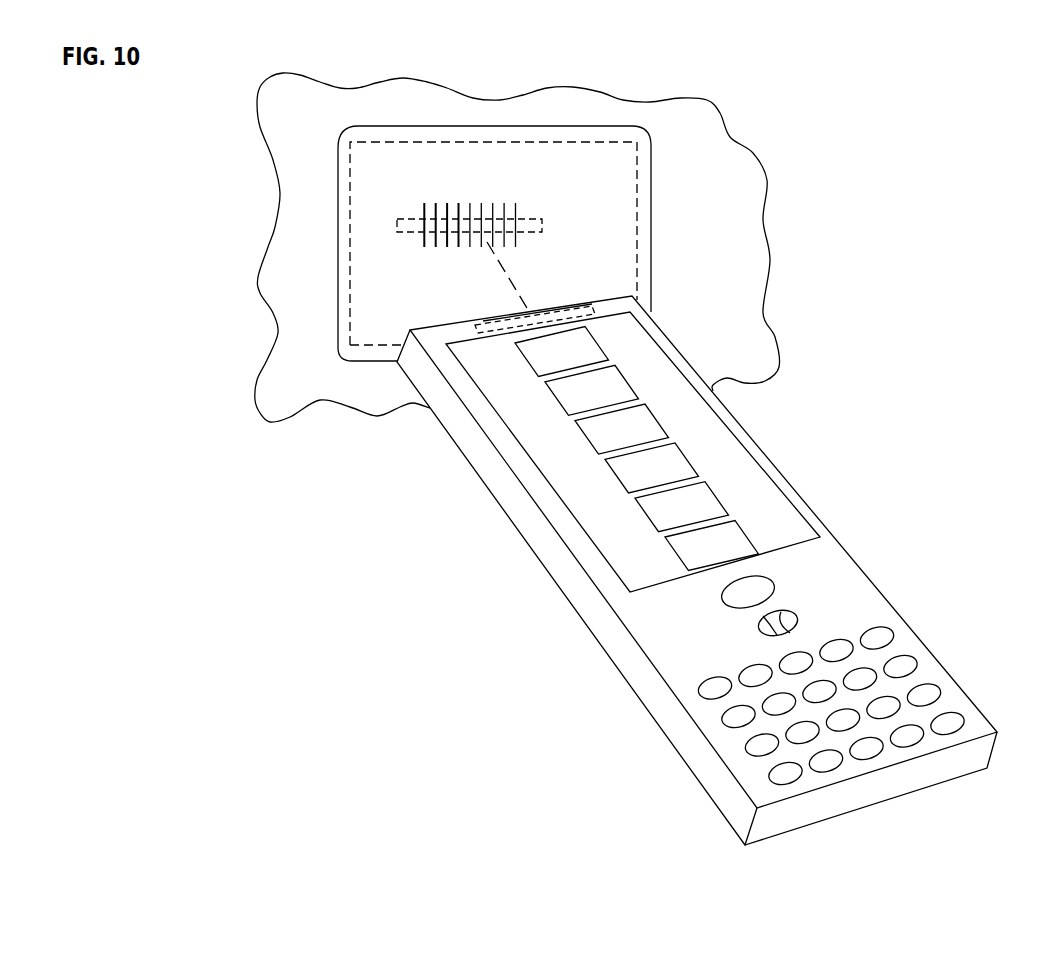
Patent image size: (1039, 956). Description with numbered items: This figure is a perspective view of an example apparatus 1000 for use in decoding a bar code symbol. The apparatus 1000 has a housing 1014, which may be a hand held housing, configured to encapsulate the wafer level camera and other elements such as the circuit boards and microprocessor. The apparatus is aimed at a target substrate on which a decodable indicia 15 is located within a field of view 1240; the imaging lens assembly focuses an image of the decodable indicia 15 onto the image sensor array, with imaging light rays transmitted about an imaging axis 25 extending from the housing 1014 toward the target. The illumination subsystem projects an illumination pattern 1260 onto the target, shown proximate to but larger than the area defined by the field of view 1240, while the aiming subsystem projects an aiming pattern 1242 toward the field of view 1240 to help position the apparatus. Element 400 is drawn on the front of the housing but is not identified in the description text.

The apparatus 1000 is at (452, 482).
The housing 1014 is at (912, 648).
The field of view 1240 is at (637, 223).
The aiming pattern 1242 is at (410, 218).
The illumination pattern 1260 is at (652, 179).
The barcode reader 400 is at (588, 313).
The decodable indicia 15 is at (517, 217).
The imaging axis 25 is at (509, 276).